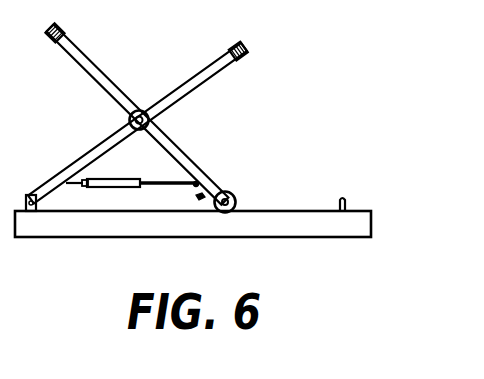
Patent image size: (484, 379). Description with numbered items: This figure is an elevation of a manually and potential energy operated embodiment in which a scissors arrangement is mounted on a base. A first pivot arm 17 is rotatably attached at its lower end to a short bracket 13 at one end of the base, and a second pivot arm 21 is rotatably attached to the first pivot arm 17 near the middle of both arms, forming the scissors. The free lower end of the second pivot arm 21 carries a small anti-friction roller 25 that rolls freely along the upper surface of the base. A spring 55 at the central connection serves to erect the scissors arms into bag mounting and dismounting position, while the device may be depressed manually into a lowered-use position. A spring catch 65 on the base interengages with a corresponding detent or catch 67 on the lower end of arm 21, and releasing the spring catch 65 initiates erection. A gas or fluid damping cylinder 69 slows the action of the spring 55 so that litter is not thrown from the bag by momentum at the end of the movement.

The bracket 13 is at (14, 202).
The first pivot arm 17 is at (222, 55).
The second pivot arm 21 is at (72, 44).
The roller 25 is at (237, 199).
The spring 55 is at (150, 104).
The spring catch 65 is at (341, 203).
The detent 67 is at (198, 197).
The damping cylinder 69 is at (98, 179).